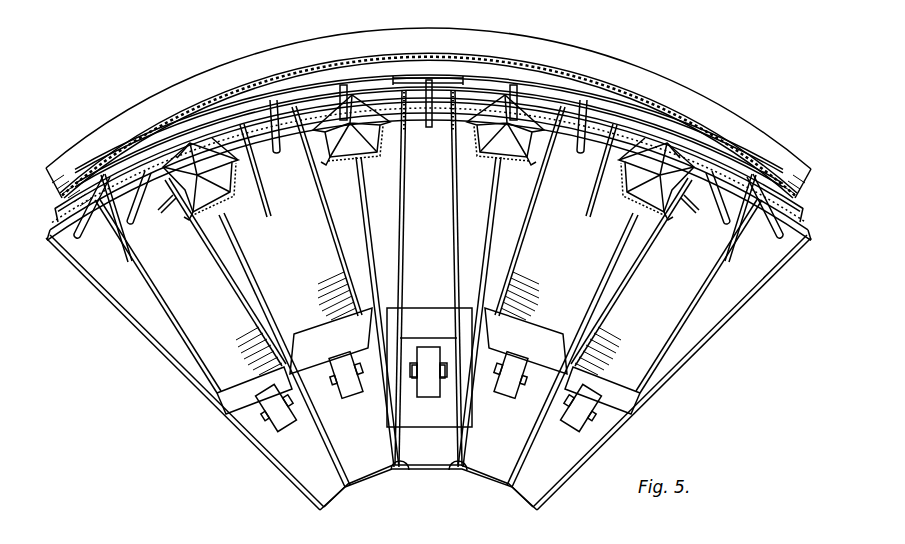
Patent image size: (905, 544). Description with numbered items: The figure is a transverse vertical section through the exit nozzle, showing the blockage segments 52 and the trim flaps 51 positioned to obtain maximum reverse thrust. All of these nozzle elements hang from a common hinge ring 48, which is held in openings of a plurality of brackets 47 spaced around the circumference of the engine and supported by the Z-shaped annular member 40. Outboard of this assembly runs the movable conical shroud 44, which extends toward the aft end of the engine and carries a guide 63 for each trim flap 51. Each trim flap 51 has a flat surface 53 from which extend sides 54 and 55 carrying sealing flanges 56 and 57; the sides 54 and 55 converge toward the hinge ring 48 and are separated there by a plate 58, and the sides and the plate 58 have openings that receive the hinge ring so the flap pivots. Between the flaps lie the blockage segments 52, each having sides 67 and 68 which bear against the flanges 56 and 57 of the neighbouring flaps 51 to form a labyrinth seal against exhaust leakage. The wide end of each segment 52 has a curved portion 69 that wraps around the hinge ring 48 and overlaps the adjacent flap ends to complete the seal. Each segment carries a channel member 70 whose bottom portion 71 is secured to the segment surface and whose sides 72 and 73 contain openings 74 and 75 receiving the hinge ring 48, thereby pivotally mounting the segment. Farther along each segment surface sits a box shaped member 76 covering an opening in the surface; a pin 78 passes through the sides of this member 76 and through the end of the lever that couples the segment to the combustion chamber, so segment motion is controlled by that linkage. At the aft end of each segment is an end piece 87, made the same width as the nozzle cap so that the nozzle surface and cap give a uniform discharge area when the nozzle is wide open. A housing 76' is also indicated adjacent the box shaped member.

The Z-shaped annular member 40 is at (712, 148).
The movable conical shroud 44 is at (628, 86).
The brackets 47 is at (278, 150).
The hinge ring 48 is at (766, 234).
The trim flaps 51 is at (230, 205).
The blockage segments 52 is at (183, 383).
The flat surface 53 is at (203, 206).
The side 54 is at (170, 205).
The side 55 is at (240, 184).
The sealing flange 56 is at (177, 158).
The sealing flange 57 is at (212, 138).
The plate 58 is at (328, 152).
The guide 63 is at (370, 468).
The side 67 is at (392, 477).
The side 68 is at (418, 472).
The curved portion 69 is at (310, 92).
The channel member 70 is at (399, 193).
The bottom portion 71 is at (437, 196).
The side 72 is at (400, 226).
The side 73 is at (457, 215).
The opening 74 is at (412, 115).
The opening 75 is at (446, 112).
The box shaped member 76 is at (429, 409).
The block housing 76' is at (428, 352).
The pin 78 is at (414, 366).
The end piece 87 is at (333, 504).